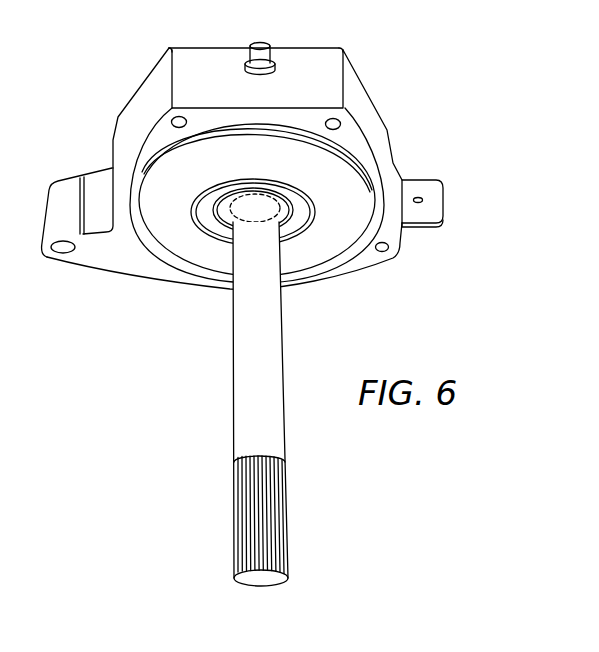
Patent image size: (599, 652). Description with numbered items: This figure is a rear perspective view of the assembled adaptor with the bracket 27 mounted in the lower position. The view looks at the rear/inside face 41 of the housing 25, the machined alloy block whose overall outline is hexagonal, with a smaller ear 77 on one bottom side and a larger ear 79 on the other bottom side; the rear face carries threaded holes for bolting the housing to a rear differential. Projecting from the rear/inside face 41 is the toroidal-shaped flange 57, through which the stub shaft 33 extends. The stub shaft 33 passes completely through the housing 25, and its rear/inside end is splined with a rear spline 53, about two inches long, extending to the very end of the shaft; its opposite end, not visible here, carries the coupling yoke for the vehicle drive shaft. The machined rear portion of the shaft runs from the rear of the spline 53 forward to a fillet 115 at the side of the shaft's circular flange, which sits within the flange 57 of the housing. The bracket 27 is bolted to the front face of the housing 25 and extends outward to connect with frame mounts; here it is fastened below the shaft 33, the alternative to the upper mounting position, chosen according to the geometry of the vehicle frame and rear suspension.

The housing 25 is at (314, 89).
The bracket 27 is at (426, 170).
The stub shaft 33 is at (269, 331).
The rear/inside face 41 is at (158, 133).
The rear spline 53 is at (253, 517).
The toroidal-shaped flange 57 is at (346, 218).
The smaller ear 77 is at (363, 254).
The larger ear 79 is at (121, 256).
The fillet 115 is at (246, 207).